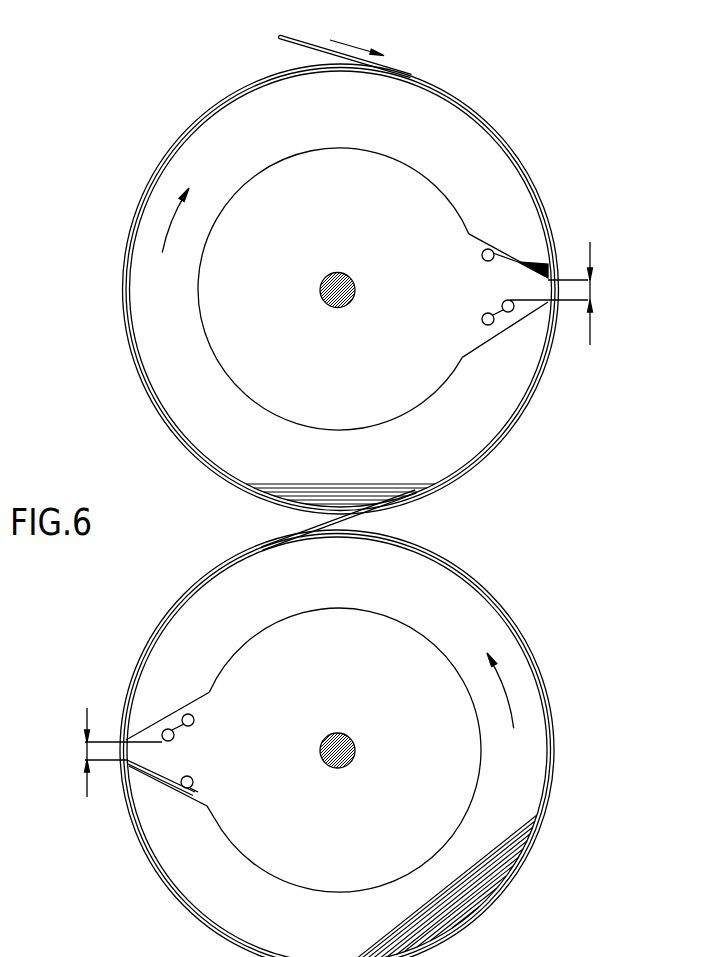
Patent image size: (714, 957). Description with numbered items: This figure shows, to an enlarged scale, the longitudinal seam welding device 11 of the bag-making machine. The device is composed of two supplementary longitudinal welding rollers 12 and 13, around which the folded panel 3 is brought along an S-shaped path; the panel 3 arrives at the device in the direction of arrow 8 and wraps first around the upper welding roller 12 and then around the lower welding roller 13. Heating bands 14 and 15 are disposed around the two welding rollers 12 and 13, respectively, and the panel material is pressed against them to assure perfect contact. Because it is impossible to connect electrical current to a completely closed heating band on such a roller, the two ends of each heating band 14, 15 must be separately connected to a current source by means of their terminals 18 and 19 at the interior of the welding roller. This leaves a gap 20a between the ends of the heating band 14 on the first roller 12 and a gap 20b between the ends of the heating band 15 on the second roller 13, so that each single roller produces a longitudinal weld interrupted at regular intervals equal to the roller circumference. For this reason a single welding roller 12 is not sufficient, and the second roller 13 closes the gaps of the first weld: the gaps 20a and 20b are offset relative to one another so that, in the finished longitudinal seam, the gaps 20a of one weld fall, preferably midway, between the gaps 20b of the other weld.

The panel 3 is at (302, 43).
The arrow 8 is at (331, 40).
The longitudinal seam welding device 11 is at (542, 173).
The welding roller 12 is at (146, 306).
The welding roller 13 is at (500, 627).
The heating band 14 is at (518, 268).
The heating band 15 is at (158, 768).
The terminal 18 is at (482, 321).
The terminal 19 is at (482, 256).
The gap 20a is at (592, 290).
The gap 20b is at (85, 748).